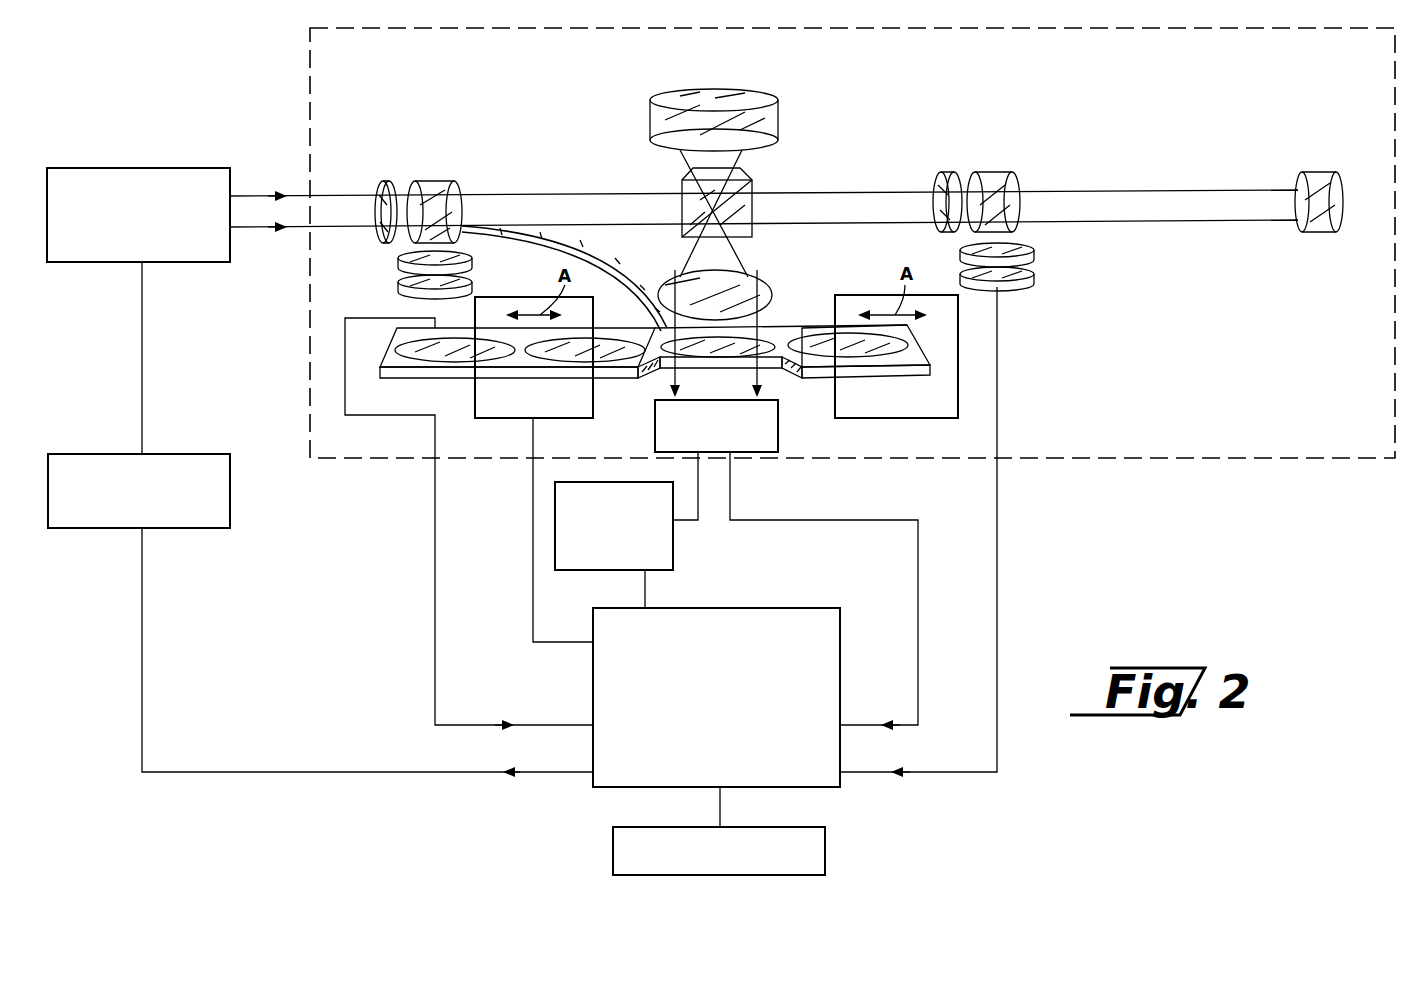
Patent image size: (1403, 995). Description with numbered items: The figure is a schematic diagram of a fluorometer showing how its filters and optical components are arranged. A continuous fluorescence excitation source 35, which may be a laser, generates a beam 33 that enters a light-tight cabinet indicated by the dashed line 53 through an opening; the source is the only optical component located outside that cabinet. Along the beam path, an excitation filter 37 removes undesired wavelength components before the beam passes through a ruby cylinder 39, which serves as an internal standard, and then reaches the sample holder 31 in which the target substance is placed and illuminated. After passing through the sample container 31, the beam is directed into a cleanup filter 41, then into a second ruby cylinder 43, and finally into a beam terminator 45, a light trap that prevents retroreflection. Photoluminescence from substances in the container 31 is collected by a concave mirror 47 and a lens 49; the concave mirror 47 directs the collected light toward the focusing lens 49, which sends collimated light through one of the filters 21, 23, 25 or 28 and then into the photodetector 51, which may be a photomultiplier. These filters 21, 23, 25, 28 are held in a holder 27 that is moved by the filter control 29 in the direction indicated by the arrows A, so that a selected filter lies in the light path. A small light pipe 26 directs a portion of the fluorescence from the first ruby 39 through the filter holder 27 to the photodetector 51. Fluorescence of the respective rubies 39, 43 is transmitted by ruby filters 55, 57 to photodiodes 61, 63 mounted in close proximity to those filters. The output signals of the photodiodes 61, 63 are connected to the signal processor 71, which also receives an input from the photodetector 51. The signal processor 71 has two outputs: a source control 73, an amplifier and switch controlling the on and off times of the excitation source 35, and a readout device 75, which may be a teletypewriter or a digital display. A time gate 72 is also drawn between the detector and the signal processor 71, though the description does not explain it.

The filter 21 is at (598, 355).
The filter 23 is at (706, 352).
The filter 25 is at (865, 350).
The light pipe 26 is at (612, 263).
The holder 27 is at (783, 330).
The filter 28 is at (442, 355).
The filter control 29 is at (483, 306).
The sample holder 31 is at (752, 185).
The beam 33 is at (538, 226).
The fluorescence excitation source 35 is at (148, 168).
The excitation filter 37 is at (391, 181).
The ruby cylinder 39 is at (437, 185).
The cleanup filter 41 is at (945, 172).
The second ruby cylinder 43 is at (990, 180).
The beam terminator 45 is at (1320, 173).
The concave mirror 47 is at (780, 118).
The lens 49 is at (760, 284).
The photodetector 51 is at (778, 437).
The light-tight cabinet 53 is at (1145, 458).
The ruby filter 55 is at (440, 278).
The ruby filter 57 is at (1036, 253).
The photodiode 61 is at (398, 284).
The photodiode 63 is at (1036, 280).
The signal processor 71 is at (840, 787).
The time gate 72 is at (675, 555).
The source control 73 is at (230, 512).
The readout device 75 is at (825, 862).